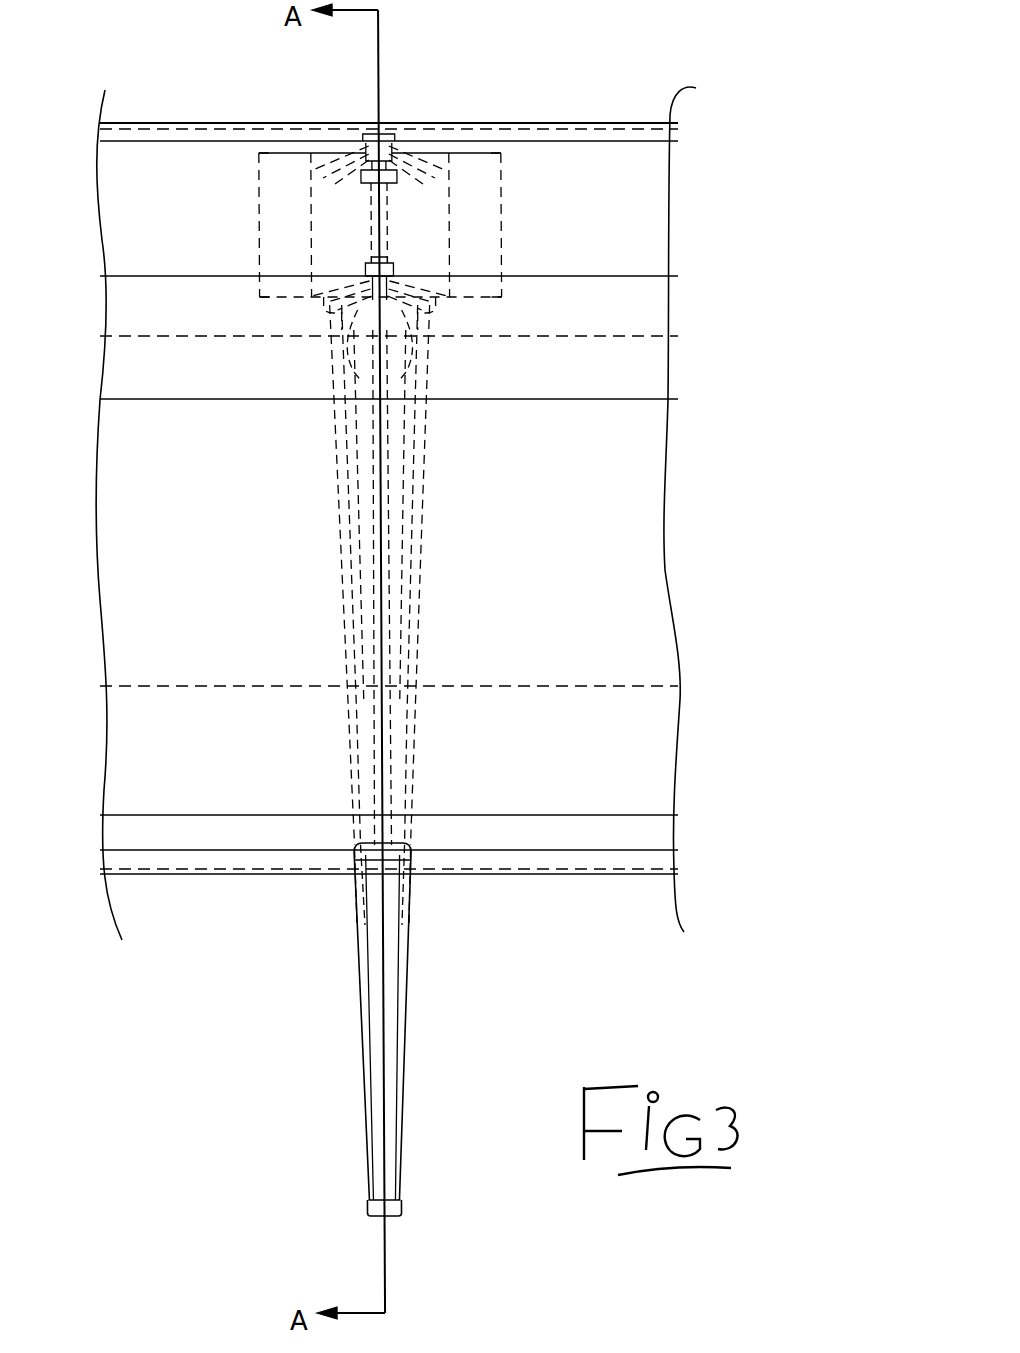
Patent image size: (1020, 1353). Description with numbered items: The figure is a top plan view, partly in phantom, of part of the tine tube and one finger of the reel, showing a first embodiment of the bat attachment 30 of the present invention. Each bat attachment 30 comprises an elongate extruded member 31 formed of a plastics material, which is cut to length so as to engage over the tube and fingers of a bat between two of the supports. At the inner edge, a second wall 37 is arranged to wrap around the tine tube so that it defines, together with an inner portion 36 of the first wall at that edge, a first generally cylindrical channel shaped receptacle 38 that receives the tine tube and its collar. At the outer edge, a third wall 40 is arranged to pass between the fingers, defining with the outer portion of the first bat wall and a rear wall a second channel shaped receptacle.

The bat attachment 30 is at (654, 585).
The elongate extruded member 31 is at (651, 651).
The inner portion of the first wall 36 is at (645, 306).
The second wall 37 is at (650, 203).
The first generally cylindrical channel shaped receptacle 38 is at (568, 200).
The third wall 40 is at (486, 862).